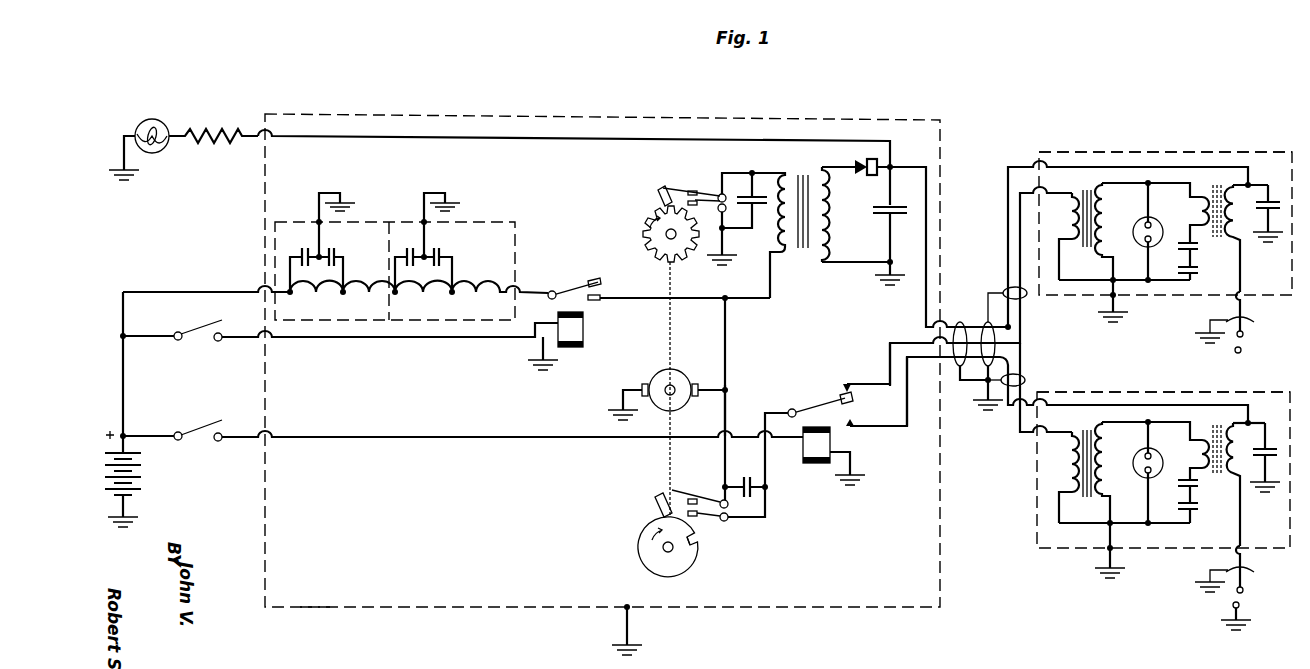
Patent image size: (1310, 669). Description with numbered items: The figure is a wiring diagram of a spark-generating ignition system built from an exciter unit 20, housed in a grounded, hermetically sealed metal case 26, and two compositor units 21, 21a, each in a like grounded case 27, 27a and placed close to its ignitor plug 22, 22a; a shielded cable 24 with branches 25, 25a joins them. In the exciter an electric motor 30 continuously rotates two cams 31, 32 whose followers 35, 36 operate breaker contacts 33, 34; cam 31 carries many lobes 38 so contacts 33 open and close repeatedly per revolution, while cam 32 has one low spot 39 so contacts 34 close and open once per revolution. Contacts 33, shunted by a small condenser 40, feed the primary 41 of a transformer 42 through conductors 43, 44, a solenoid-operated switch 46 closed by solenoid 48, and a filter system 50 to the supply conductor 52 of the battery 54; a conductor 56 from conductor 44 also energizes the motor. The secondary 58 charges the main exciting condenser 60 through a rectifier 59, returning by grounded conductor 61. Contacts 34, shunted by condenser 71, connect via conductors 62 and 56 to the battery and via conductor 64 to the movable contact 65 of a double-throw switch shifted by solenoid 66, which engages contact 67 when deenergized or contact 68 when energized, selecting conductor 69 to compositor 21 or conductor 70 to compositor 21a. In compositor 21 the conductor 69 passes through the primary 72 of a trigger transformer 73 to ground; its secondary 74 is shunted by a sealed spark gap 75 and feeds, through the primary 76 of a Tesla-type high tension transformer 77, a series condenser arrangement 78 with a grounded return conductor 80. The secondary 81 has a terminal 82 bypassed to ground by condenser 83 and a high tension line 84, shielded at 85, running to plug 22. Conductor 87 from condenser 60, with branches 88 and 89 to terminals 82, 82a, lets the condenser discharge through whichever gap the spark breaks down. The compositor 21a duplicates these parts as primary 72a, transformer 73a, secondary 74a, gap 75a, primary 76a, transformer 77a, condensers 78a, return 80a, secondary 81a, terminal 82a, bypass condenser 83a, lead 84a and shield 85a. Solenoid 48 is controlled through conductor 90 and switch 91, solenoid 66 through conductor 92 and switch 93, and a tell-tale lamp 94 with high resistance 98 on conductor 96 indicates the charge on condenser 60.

The exciter unit 20 is at (445, 597).
The compositor unit 21 is at (1106, 150).
The compositor unit 21a is at (1099, 406).
The ignitor plug 22 is at (1245, 343).
The ignitor plug 22a is at (1244, 604).
The shielded cable 24 is at (969, 384).
The cable branch 25 is at (998, 290).
The cable branch 25a is at (1030, 380).
The metal case 26 is at (345, 598).
The metal case 27 is at (1192, 150).
The metal case 27a is at (1042, 548).
The electric motor 30 is at (666, 376).
The cam 31 is at (652, 225).
The cam 32 is at (640, 555).
The breaker contacts 33 is at (720, 192).
The breaker contacts 34 is at (700, 491).
The follower 35 is at (660, 195).
The follower 36 is at (655, 510).
The lobes 38 is at (646, 242).
The low spot 39 is at (700, 539).
The condenser 40 is at (755, 196).
The primary 41 is at (778, 240).
The transformer 42 is at (806, 173).
The conductor 43 is at (748, 300).
The conductor 44 is at (690, 300).
The solenoid-operated switch 46 is at (590, 283).
The solenoid 48 is at (585, 329).
The filter system 50 is at (378, 222).
The supply conductor 52 is at (127, 384).
The battery 54 is at (143, 495).
The conductor 56 is at (730, 355).
The secondary 58 is at (832, 237).
The rectifier 59 is at (872, 158).
The exciting condenser 60 is at (892, 207).
The conductor 61 is at (855, 265).
The conductor 62 is at (730, 399).
The conductor 64 is at (762, 516).
The movable contact 65 is at (855, 395).
The solenoid 66 is at (815, 465).
The fixed contact 67 is at (845, 383).
The fixed contact 68 is at (854, 427).
The conductor 69 is at (903, 342).
The conductor 70 is at (1020, 431).
The condenser 71 is at (747, 477).
The primary 72 is at (1072, 194).
The primary 72a is at (1068, 470).
The trigger transformer 73 is at (1088, 190).
The trigger transformer 73a is at (1085, 498).
The secondary 74 is at (1110, 200).
The secondary 74a is at (1106, 490).
The spark gap 75 is at (1155, 219).
The spark gap 75a is at (1140, 464).
The primary 76 is at (1202, 192).
The primary 76a is at (1178, 440).
The high tension transformer 77 is at (1217, 238).
The high tension transformer 77a is at (1217, 478).
The condenser arrangement 78 is at (1194, 275).
The condenser arrangement 78a is at (1180, 496).
The return conductor 80 is at (1158, 283).
The return conductor 80a is at (1133, 528).
The secondary 81 is at (1243, 243).
The secondary 81a is at (1238, 455).
The terminal 82 is at (1250, 183).
The terminal 82a is at (1250, 421).
The bypass condenser 83 is at (1272, 200).
The bypass condenser 83a is at (1263, 460).
The high tension line 84 is at (1243, 284).
The high tension line 84a is at (1243, 531).
The shield 85 is at (1226, 316).
The shield 85a is at (1226, 576).
The conductor 87 is at (928, 249).
The branch conductor 88 is at (1006, 183).
The branch conductor 89 is at (1150, 406).
The conductor 90 is at (425, 338).
The switch 91 is at (207, 345).
The conductor 92 is at (408, 439).
The switch 93 is at (207, 445).
The tell-tale lamp 94 is at (166, 120).
The conductor 96 is at (350, 135).
The high resistance 98 is at (212, 126).